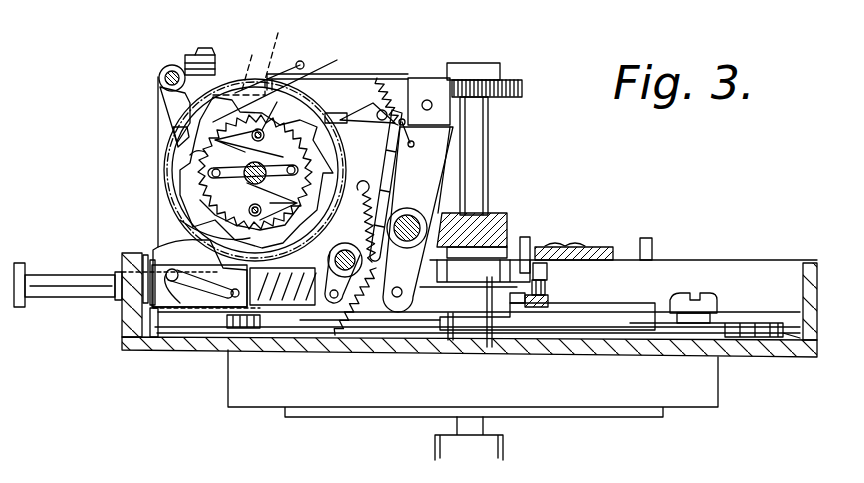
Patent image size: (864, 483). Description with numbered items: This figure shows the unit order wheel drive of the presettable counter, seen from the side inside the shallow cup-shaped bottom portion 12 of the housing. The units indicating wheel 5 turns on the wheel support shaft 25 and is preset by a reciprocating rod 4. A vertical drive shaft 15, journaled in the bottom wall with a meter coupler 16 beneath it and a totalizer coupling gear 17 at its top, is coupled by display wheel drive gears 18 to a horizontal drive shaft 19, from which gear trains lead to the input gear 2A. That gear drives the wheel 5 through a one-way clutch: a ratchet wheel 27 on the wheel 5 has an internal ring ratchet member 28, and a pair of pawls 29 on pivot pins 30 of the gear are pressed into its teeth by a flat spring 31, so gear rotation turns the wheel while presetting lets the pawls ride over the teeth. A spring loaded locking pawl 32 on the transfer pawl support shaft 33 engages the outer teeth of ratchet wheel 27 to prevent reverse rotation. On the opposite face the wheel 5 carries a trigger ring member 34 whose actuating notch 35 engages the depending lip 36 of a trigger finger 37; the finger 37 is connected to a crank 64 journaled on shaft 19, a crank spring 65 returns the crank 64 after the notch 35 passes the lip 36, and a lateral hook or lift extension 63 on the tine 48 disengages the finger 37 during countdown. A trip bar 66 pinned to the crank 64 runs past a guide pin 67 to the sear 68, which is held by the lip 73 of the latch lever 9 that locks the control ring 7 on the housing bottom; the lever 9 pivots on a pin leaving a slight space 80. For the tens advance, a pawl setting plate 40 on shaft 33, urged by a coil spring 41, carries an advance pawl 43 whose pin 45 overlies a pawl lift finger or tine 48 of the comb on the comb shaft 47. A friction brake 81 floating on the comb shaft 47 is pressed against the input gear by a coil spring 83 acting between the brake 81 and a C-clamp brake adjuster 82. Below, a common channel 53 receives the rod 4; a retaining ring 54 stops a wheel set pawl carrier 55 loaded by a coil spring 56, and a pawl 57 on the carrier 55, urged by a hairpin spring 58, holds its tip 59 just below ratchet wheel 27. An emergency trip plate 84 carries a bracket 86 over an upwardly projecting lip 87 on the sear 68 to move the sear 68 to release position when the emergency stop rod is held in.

The rod 4 is at (78, 278).
The indicating wheel 5 is at (185, 141).
The control ring 7 is at (607, 330).
The latch lever 9 is at (818, 360).
The bottom portion 12 is at (137, 343).
The vertical drive shaft 15 is at (483, 123).
The meter coupler 16 is at (505, 448).
The totalizer coupling gear 17 is at (522, 85).
The display wheel drive gears 18 is at (445, 210).
The horizontal drive shaft 19 is at (384, 270).
The pawl 2A is at (180, 133).
The wheel support shaft 25 is at (220, 183).
The ratchet wheel 27 is at (190, 223).
The internal ring ratchet member 28 is at (193, 157).
The pawls 29 is at (255, 172).
The pivot pins 30 is at (250, 205).
The flat spring 31 is at (252, 160).
The locking pawl 32 is at (342, 175).
The transfer pawl support shaft 33 is at (343, 263).
The trigger ring member 34 is at (162, 163).
The actuating notch 35 is at (256, 58).
The depending lip 36 is at (288, 36).
The trigger finger 37 is at (365, 74).
The pawl setting plate 40 is at (370, 180).
The coil spring 41 is at (370, 350).
The advance pawl 43 is at (372, 78).
The pin 45 is at (302, 60).
The comb shaft 47 is at (168, 70).
The tine 48 is at (323, 108).
The common channel 53 is at (150, 308).
The retaining ring 54 is at (148, 290).
The wheel set pawl carrier 55 is at (207, 305).
The coil spring 56 is at (278, 307).
The pawl 57 is at (165, 248).
The hairpin spring 58 is at (207, 300).
The pawl tip 59 is at (215, 250).
The lift extension 63 is at (345, 126).
The crank 64 is at (437, 156).
The crank spring 65 is at (347, 345).
The trip bar 66 is at (448, 333).
The guide pin 67 is at (483, 333).
The sear 68 is at (550, 301).
The lip 73 is at (492, 347).
The space 80 is at (712, 320).
The friction brake 81 is at (165, 98).
The brake adjuster 82 is at (212, 52).
The coil spring 83 is at (192, 55).
The emergency trip plate 84 is at (610, 248).
The bracket 86 is at (543, 247).
The lip 87 is at (548, 272).